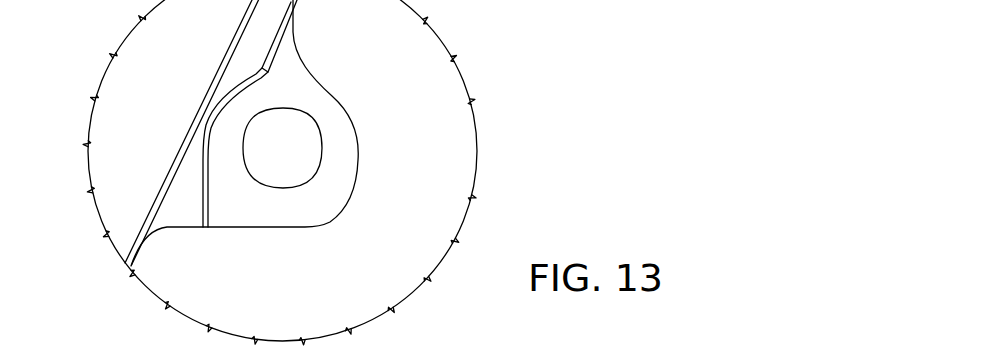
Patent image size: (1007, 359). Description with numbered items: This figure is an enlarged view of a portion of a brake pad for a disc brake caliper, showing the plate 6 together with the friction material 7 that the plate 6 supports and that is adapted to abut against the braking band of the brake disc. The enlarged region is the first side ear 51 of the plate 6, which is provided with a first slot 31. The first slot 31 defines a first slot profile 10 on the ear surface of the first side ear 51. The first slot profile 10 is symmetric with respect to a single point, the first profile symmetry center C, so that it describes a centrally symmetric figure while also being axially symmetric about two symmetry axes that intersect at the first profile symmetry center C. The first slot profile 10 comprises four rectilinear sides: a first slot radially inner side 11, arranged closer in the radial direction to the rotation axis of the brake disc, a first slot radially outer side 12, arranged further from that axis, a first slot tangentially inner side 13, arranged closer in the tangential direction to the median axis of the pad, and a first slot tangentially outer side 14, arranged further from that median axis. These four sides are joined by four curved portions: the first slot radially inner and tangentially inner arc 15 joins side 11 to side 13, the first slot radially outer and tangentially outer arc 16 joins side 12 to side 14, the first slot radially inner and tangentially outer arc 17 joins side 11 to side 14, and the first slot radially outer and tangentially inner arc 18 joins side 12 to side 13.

The plate 6 is at (270, 17).
The friction material 7 is at (117, 145).
The first slot profile 10 is at (306, 108).
The first slot radially inner side 11 is at (285, 188).
The first slot radially outer side 12 is at (283, 108).
The first slot tangentially inner side 13 is at (243, 158).
The first slot tangentially outer side 14 is at (323, 135).
The first slot radially inner and tangentially inner arc 15 is at (258, 188).
The first slot radially outer and tangentially outer arc 16 is at (320, 122).
The first slot radially inner and tangentially outer arc 17 is at (320, 168).
The first slot radially outer and tangentially inner arc 18 is at (247, 125).
The first slot 31 is at (292, 172).
The first side ear 51 is at (323, 198).
The first profile symmetry center C is at (282, 148).